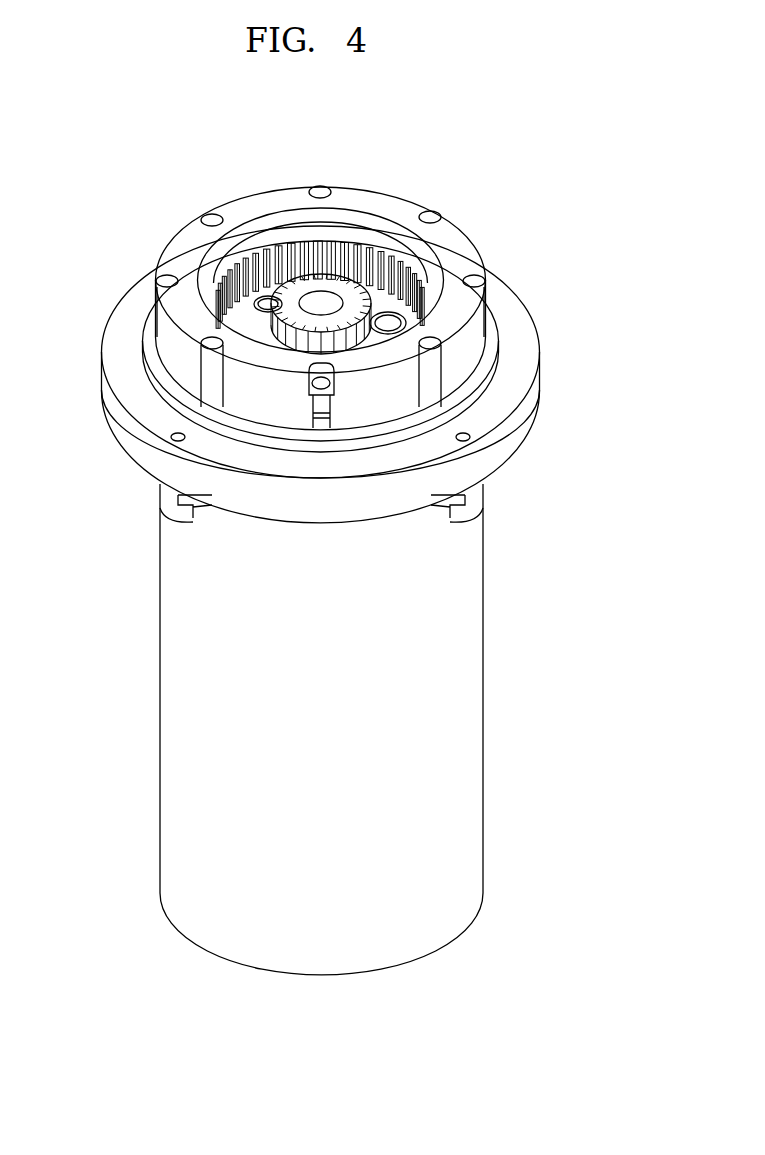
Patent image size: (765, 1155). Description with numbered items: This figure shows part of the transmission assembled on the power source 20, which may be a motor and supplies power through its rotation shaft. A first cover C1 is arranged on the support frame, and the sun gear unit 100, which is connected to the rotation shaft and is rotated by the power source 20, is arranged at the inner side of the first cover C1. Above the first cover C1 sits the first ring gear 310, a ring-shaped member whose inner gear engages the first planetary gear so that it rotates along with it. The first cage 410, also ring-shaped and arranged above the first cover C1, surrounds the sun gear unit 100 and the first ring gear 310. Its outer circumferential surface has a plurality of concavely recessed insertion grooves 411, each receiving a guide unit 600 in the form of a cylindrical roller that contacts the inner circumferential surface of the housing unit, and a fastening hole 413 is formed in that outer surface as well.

The power source 20 is at (178, 633).
The first cover C1 is at (103, 385).
The sun gear unit 100 is at (360, 297).
The first ring gear 310 is at (357, 248).
The first cage 410 is at (468, 233).
The insertion groove 411 is at (434, 212).
The fastening hole 413 is at (335, 390).
The guide unit 600 is at (200, 357).